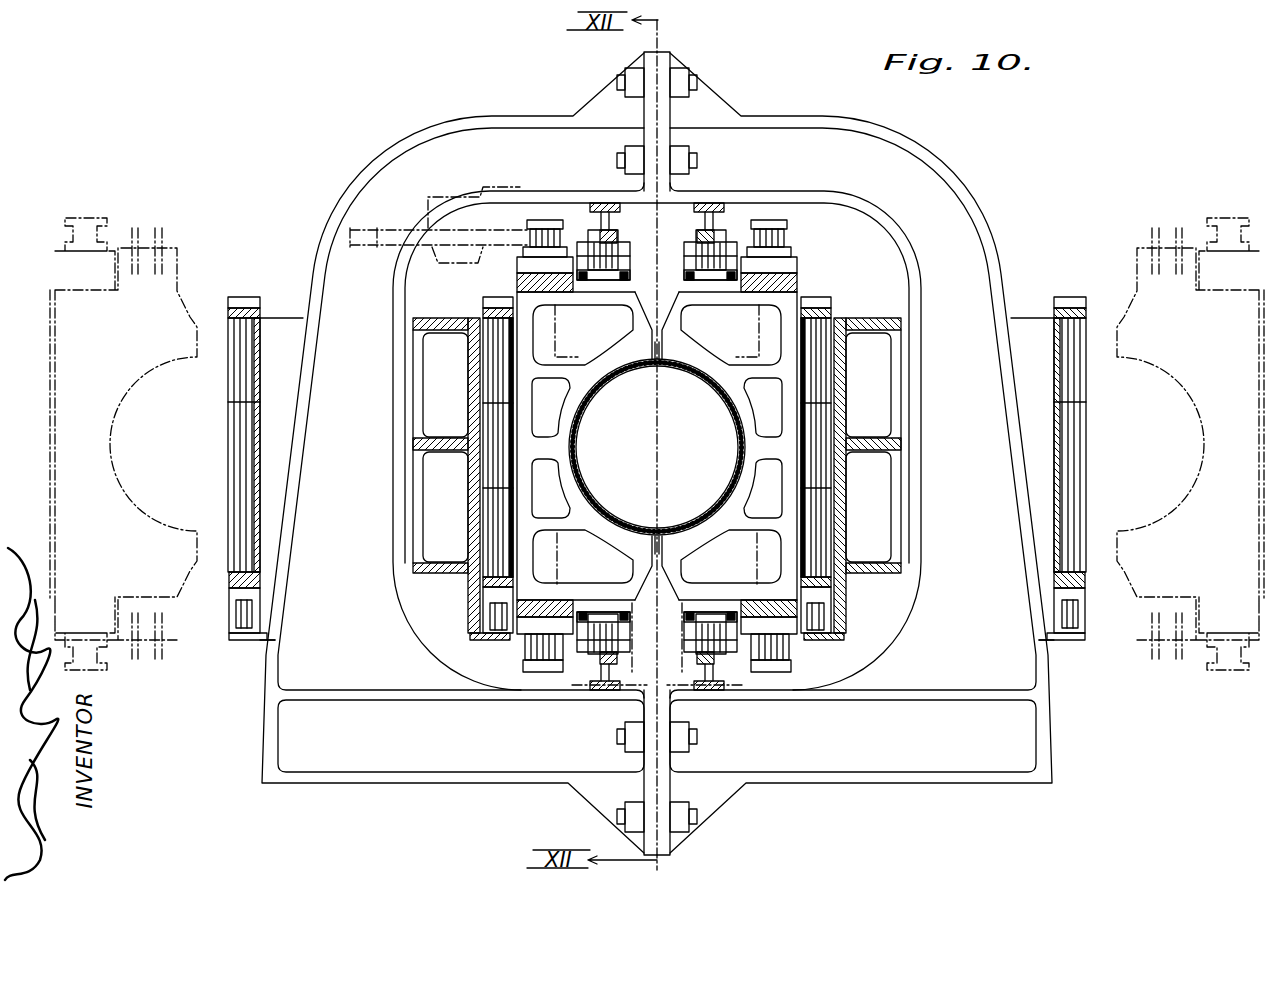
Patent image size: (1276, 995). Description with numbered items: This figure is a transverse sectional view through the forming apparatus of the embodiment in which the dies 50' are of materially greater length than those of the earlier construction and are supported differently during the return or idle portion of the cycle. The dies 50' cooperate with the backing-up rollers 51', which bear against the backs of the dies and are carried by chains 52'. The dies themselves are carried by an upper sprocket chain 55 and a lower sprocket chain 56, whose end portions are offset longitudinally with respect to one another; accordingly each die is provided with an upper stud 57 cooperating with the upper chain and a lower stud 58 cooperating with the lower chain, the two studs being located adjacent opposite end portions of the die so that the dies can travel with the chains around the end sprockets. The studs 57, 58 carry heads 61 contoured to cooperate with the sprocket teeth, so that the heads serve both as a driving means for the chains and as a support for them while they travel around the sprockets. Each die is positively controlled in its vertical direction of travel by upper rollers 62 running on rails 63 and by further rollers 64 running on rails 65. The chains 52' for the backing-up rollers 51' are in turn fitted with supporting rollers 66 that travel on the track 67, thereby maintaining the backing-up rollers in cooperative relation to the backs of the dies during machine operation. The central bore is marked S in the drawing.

The die 50' is at (635, 444).
The backing-up roller 51' is at (655, 437).
The chain for the backing-up rollers 52' is at (657, 460).
The upper sprocket chain 55 is at (520, 268).
The lower sprocket chain 56 is at (558, 620).
The upper stud 57 is at (558, 325).
The lower stud 58 is at (545, 645).
The head 61 is at (530, 220).
The upper roller 62 is at (690, 252).
The rail 63 is at (705, 218).
The roller 64 is at (626, 640).
The rail 65 is at (698, 666).
The supporting roller 66 is at (498, 636).
The track 67 is at (490, 636).
The shaft S is at (578, 442).